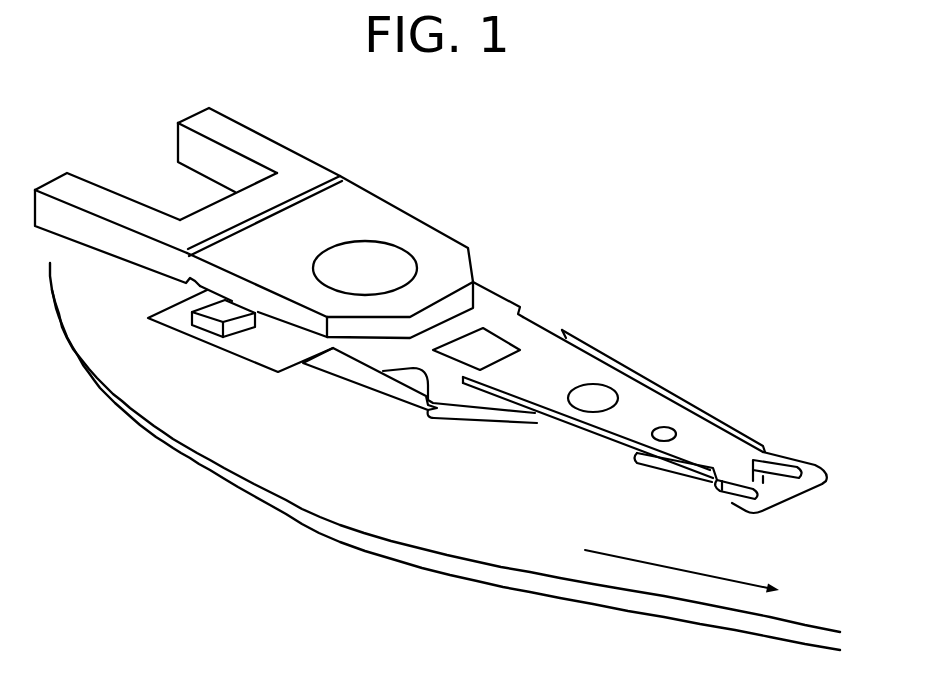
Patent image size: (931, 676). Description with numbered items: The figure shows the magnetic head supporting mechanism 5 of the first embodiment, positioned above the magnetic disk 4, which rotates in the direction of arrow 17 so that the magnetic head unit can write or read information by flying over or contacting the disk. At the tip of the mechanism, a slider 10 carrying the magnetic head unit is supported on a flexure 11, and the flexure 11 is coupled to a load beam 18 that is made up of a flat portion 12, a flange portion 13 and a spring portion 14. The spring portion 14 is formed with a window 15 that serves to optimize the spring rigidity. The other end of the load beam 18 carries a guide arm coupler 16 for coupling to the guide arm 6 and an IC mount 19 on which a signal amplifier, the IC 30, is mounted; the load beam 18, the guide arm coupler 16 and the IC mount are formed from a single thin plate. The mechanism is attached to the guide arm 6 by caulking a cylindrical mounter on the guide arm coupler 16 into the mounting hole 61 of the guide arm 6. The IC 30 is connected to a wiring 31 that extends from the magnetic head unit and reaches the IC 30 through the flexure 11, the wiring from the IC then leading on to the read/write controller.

The magnetic disk 4 is at (335, 528).
The magnetic head supporting mechanism 5 is at (718, 313).
The guide arm 6 is at (306, 173).
The mounting hole 61 is at (384, 250).
The signal amplifier (IC) 30 is at (228, 301).
The wiring 31 is at (348, 375).
The IC mount 19 is at (258, 345).
The spring portion 14 is at (437, 367).
The guide arm coupler 16 is at (482, 297).
The window 15 is at (487, 340).
The flange portion 13 is at (633, 372).
The load beam 18 is at (588, 342).
The flat portion 12 is at (710, 455).
The flexure 11 is at (813, 477).
The slider 10 is at (738, 488).
The arrow (disk rotation direction) 17 is at (682, 560).